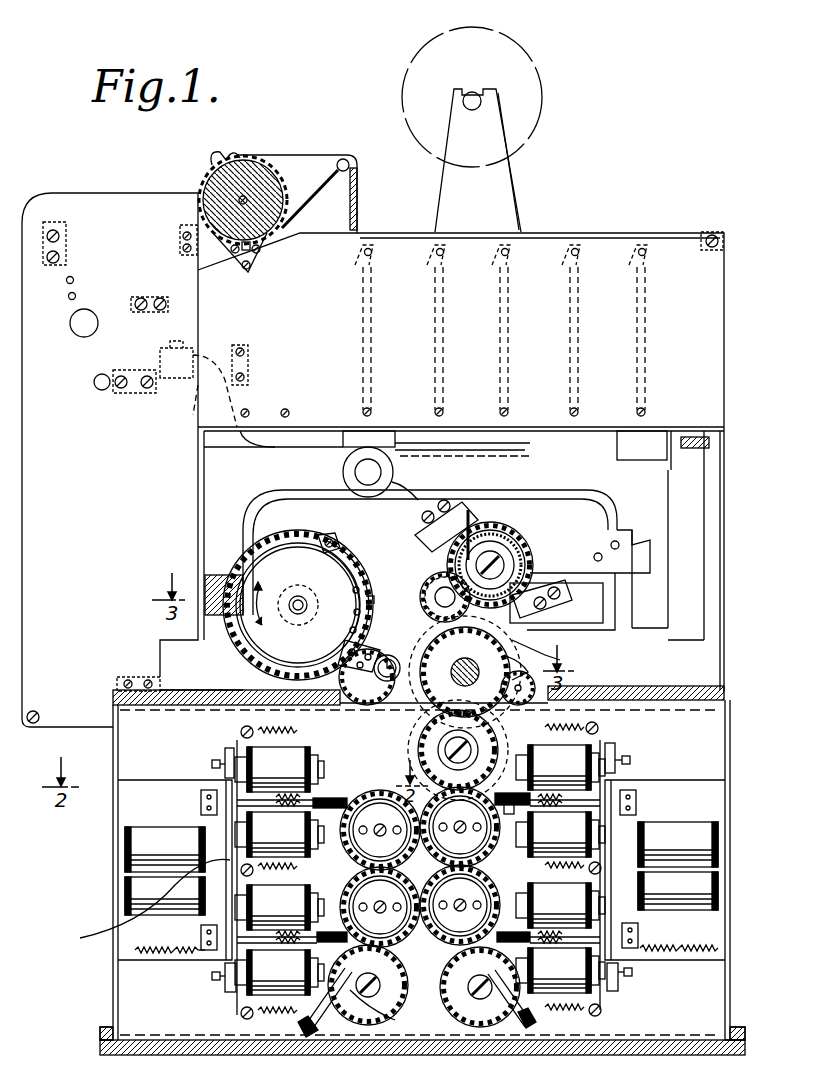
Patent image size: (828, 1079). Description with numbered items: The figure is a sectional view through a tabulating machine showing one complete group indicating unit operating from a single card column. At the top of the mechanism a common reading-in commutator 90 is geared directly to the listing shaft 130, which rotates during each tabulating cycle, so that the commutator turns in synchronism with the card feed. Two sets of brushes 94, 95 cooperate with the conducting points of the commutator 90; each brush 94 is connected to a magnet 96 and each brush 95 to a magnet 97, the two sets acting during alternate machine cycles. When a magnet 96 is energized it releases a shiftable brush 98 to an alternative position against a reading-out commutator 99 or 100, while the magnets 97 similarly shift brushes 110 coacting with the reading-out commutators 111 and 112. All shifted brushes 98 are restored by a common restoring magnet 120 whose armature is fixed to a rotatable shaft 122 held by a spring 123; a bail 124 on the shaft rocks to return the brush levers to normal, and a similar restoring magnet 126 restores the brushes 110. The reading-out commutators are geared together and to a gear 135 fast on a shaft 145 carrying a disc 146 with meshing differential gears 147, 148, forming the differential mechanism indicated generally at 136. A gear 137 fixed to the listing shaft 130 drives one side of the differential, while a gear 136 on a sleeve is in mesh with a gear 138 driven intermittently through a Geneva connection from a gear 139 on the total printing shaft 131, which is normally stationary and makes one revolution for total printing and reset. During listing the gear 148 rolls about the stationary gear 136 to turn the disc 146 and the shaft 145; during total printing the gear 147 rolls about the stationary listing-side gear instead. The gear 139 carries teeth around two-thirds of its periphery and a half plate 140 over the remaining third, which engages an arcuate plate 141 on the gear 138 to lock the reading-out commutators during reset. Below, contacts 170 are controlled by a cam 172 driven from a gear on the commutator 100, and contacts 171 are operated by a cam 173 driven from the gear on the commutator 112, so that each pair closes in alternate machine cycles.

The reading-in commutator 90 is at (517, 553).
The brushes 94 is at (522, 590).
The brushes 95 is at (470, 522).
The magnets 96 is at (279, 871).
The magnets 97 is at (560, 869).
The shiftable brushes 98 is at (348, 805).
The reading-out commutator 99 is at (392, 792).
The reading-out commutator 100 is at (402, 985).
The brushes 110 is at (512, 812).
The reading-out commutator 111 is at (487, 810).
The reading-out commutator 112 is at (490, 879).
The restoring magnet 120 is at (155, 828).
The rotatable shaft 122 is at (205, 912).
The spring 123 is at (170, 956).
The bail 124 is at (143, 904).
The restoring magnet 126 is at (670, 835).
The listing shaft 130 is at (443, 592).
The total printing shaft 131 is at (302, 604).
The gear 135 is at (482, 692).
The gear 136 is at (442, 670).
The gear 137 is at (425, 598).
The gear 138 is at (372, 700).
The gear 139 is at (262, 643).
The half plate 140 is at (335, 537).
The arcuate plate 141 is at (360, 652).
The shaft 145 is at (465, 688).
The disc 146 is at (525, 632).
The differential gear 147 is at (540, 655).
The differential gear 148 is at (534, 689).
The contacts 170 is at (345, 1007).
The contacts 171 is at (470, 975).
The cam 172 is at (375, 1003).
The cam 173 is at (470, 1003).